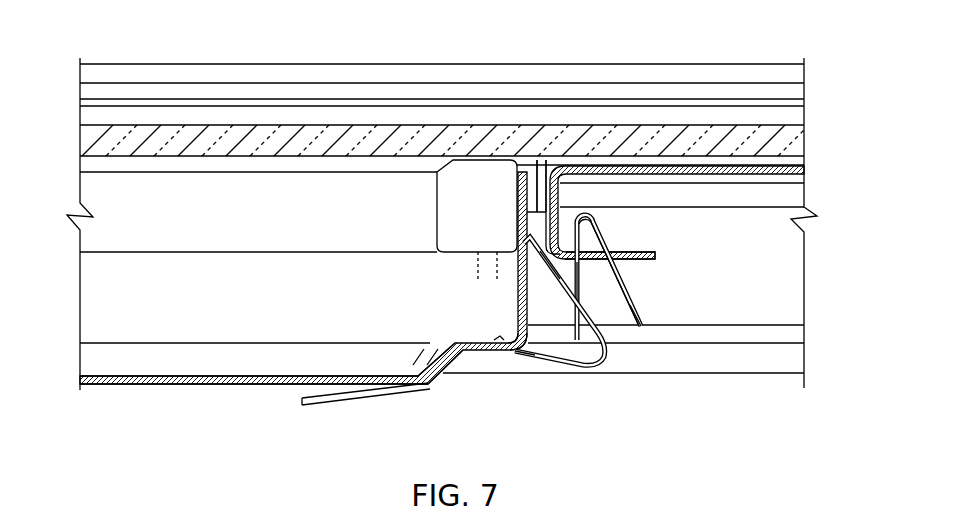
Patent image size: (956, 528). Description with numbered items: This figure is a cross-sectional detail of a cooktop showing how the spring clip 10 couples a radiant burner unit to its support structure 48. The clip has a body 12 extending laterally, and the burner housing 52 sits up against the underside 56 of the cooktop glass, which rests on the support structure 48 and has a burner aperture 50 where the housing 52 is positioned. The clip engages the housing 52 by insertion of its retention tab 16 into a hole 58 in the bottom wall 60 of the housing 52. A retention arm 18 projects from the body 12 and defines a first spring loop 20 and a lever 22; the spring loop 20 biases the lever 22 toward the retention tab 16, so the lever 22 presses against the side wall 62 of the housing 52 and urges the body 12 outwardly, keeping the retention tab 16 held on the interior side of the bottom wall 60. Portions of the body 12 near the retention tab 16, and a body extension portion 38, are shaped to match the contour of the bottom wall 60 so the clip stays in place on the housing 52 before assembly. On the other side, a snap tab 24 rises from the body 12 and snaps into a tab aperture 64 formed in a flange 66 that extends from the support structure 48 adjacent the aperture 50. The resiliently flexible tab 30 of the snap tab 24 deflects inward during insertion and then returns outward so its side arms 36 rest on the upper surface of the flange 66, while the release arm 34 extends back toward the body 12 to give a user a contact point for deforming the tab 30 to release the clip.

The spring clip 10 is at (643, 299).
The body 12 is at (503, 352).
The retention tab 16 is at (500, 338).
The retention arm 18 is at (548, 286).
The first spring loop 20 is at (597, 362).
The lever 22 is at (485, 278).
The snap tab 24 is at (610, 278).
The tab 30 is at (640, 243).
The release arm 34 is at (642, 309).
The side arms 36 is at (608, 242).
The body extension portion 38 is at (325, 403).
The support structure 48 is at (693, 135).
The aperture 50 is at (546, 170).
The housing 52 is at (176, 388).
The underside 56 is at (723, 157).
The hole 58 is at (478, 352).
The bottom wall 60 is at (510, 352).
The side wall 62 is at (537, 177).
The tab aperture 64 is at (595, 262).
The flange 66 is at (645, 257).